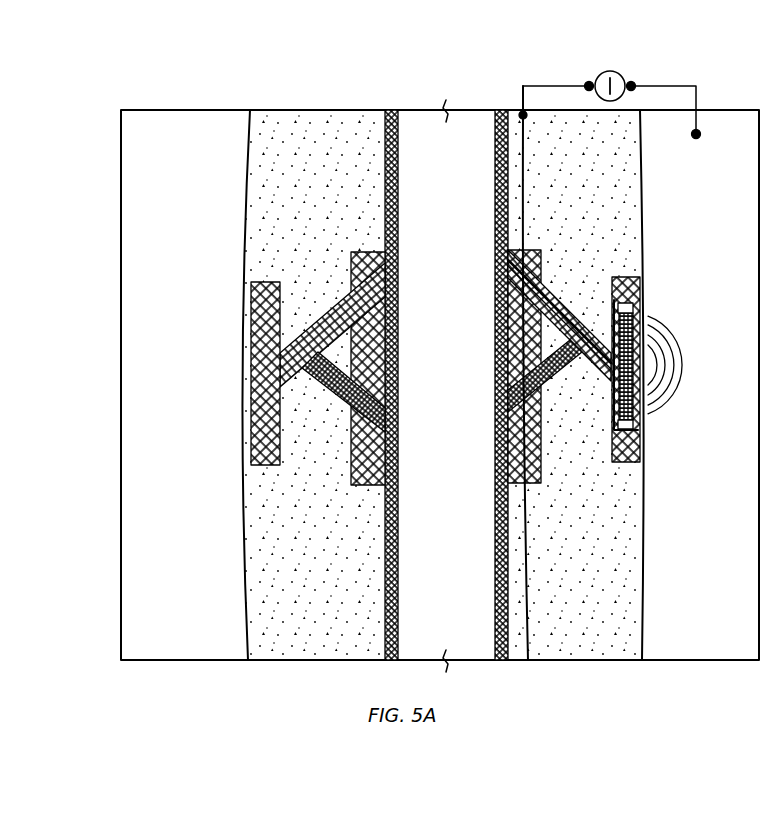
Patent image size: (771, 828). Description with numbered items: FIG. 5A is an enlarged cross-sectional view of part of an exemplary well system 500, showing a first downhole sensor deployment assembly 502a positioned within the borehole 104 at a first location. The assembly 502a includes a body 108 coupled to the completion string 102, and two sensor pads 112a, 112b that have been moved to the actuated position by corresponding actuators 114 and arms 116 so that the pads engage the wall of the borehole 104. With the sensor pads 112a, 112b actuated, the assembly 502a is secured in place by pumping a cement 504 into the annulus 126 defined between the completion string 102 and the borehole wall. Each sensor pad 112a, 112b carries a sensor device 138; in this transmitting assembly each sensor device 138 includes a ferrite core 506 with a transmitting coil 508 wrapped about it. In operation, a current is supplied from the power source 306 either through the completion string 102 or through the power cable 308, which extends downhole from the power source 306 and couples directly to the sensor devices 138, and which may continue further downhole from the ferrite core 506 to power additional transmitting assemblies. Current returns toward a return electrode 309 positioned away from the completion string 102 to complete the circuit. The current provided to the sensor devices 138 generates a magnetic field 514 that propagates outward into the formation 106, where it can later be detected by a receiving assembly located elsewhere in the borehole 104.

The well system 500 is at (117, 127).
The completion string 102 is at (399, 150).
The borehole 104 is at (638, 171).
The formation 106 is at (718, 591).
The body 108 is at (494, 300).
The first sensor pad 112a is at (250, 293).
The second sensor pad 112b is at (640, 293).
The actuator 114 is at (322, 382).
The arm 116 is at (301, 317).
The annulus 126 is at (333, 195).
The sensor device 138 is at (641, 412).
The power source 306 is at (610, 71).
The power cable 308 is at (523, 95).
The return electrode 309 is at (699, 137).
The first downhole sensor deployment assembly 502a is at (310, 506).
The cement 504 is at (636, 225).
The ferrite core 506 is at (641, 430).
The transmitting coil 508 is at (558, 262).
The magnetic field 514 is at (683, 367).